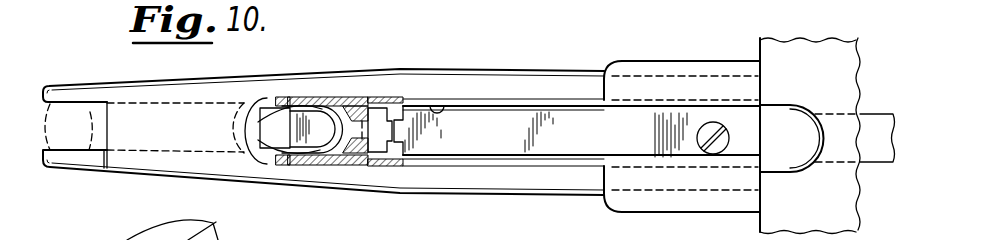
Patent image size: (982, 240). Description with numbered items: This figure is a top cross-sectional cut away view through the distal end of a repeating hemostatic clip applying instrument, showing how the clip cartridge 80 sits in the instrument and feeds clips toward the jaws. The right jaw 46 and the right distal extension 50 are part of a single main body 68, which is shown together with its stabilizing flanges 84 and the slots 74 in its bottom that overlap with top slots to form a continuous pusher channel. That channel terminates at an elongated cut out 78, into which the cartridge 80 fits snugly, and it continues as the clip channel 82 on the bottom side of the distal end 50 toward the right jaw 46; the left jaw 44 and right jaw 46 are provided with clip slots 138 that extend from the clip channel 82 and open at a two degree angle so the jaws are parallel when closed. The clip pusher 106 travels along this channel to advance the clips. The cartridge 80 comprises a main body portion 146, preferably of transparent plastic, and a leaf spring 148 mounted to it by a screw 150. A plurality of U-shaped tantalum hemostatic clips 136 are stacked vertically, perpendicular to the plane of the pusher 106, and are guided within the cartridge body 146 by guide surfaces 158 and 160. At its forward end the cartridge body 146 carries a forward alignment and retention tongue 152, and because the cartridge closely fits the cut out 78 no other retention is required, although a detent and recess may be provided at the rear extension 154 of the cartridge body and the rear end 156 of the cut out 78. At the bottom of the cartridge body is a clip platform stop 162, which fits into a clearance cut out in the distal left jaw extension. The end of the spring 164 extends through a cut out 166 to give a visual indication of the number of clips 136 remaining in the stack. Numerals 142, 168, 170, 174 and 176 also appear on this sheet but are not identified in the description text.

The left jaw 44 is at (80, 168).
The right jaw 46 is at (82, 85).
The right distal extension 50 is at (382, 70).
The main body 68 is at (555, 52).
The slots in the bottom 74 is at (840, 0).
The elongated cut out 78 is at (268, 97).
The cartridge 80 is at (481, 103).
The clip channel 82 is at (157, 152).
The stabilizing flanges 84 is at (760, 45).
The clip pusher 106 is at (877, 153).
The hemostatic clips 136 is at (309, 142).
The clip slots 138 is at (68, 127).
The member 142 is at (302, 0).
The main body portion 146 is at (451, 163).
The leaf spring 148 is at (594, 147).
The screw 150 is at (710, 123).
The forward alignment and retention tongue 152 is at (232, 130).
The rear extension 154 is at (798, 150).
The rear end 156 is at (821, 141).
The guide surface 158 is at (297, 104).
The guide surface 160 is at (317, 110).
The clip platform stop 162 is at (258, 153).
The end of the spring 164 is at (612, 235).
The cut out 166 is at (262, 118).
The sleeve end 168 is at (350, 158).
The member 170 is at (687, 236).
The member 174 is at (128, 238).
The member 176 is at (237, 238).